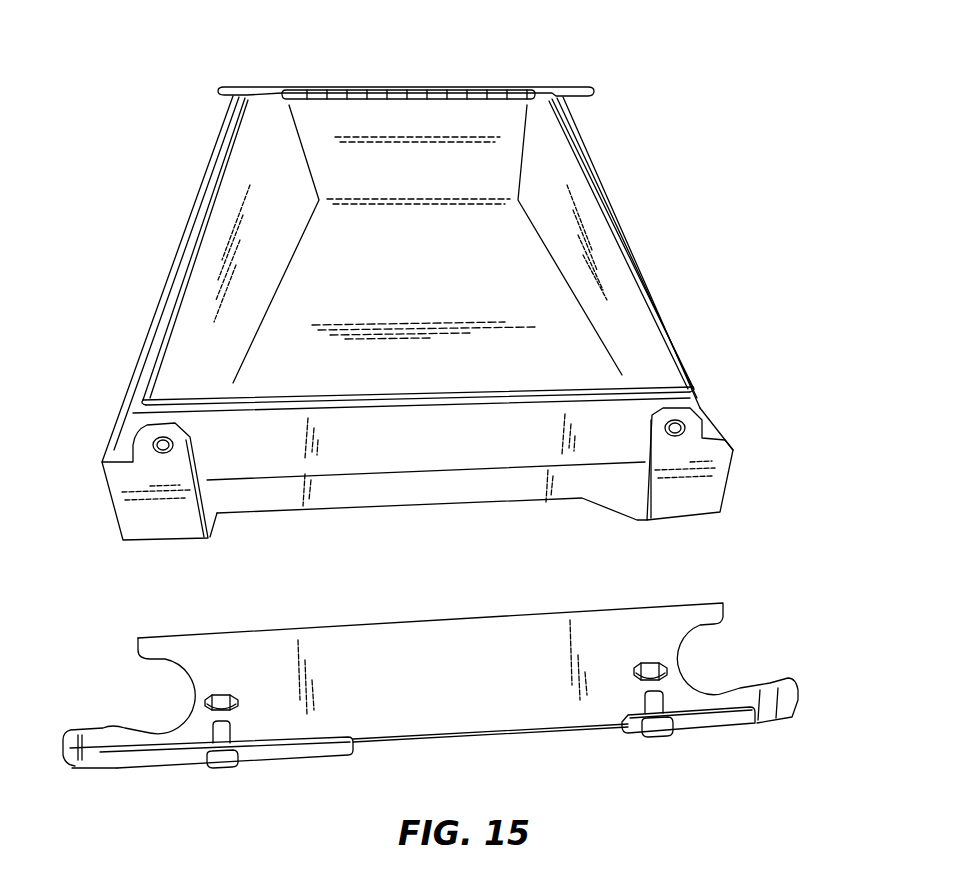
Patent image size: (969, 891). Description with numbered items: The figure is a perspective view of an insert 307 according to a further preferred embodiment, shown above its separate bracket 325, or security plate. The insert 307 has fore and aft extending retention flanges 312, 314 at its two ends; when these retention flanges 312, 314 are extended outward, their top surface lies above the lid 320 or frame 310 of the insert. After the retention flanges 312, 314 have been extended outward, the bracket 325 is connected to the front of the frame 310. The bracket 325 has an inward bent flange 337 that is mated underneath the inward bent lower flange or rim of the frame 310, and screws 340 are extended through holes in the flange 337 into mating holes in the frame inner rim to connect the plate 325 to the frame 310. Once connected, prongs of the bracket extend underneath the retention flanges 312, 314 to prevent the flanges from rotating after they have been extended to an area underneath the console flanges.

The insert 307 is at (397, 55).
The lid 320 is at (652, 347).
The frame 310 is at (693, 405).
The retention flange 312 is at (720, 497).
The retention flange 314 is at (115, 520).
The bracket 325 is at (183, 680).
The inward bent flange 337 is at (283, 755).
The screws 340 is at (230, 732).